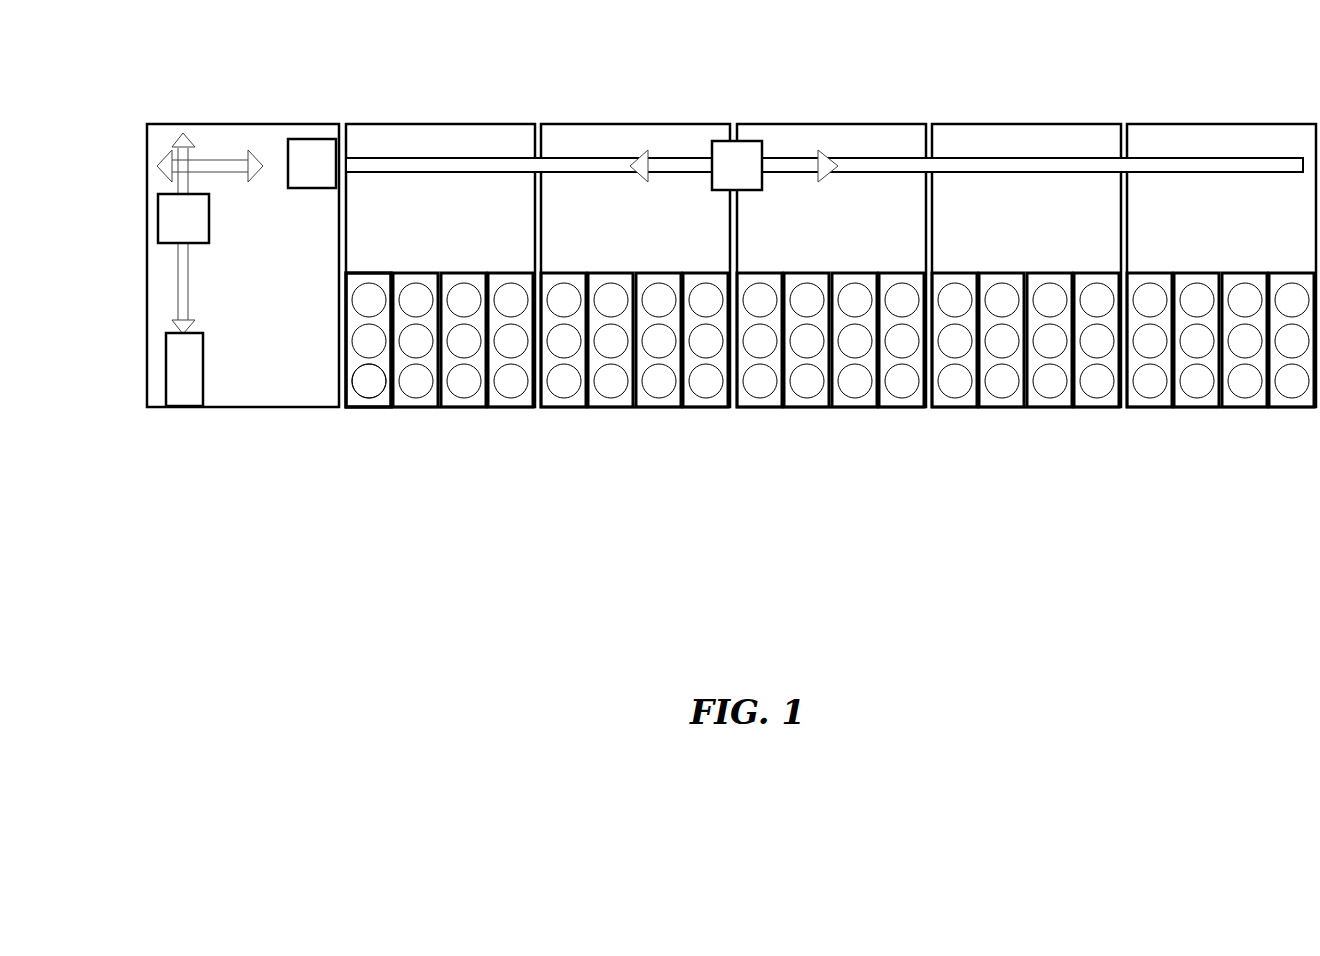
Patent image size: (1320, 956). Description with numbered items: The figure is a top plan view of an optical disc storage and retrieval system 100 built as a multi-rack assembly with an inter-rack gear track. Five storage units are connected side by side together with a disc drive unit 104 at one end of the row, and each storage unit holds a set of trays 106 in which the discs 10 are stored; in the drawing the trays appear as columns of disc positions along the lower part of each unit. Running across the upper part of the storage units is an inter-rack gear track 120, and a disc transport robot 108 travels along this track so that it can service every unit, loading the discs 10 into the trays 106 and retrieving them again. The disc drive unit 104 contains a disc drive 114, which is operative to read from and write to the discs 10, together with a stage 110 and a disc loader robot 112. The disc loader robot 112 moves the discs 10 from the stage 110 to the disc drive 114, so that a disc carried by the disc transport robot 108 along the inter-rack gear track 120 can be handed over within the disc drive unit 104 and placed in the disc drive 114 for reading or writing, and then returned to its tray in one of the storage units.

The optical disc storage and retrieval system 100 is at (689, 298).
The disc drive unit 104 is at (138, 347).
The trays 106 is at (381, 408).
The discs 10 is at (359, 388).
The disc transport robot 108 is at (740, 151).
The stage 110 is at (300, 131).
The disc loader robot 112 is at (156, 213).
The disc drive 114 is at (176, 408).
The inter-rack gear track 120 is at (1005, 163).